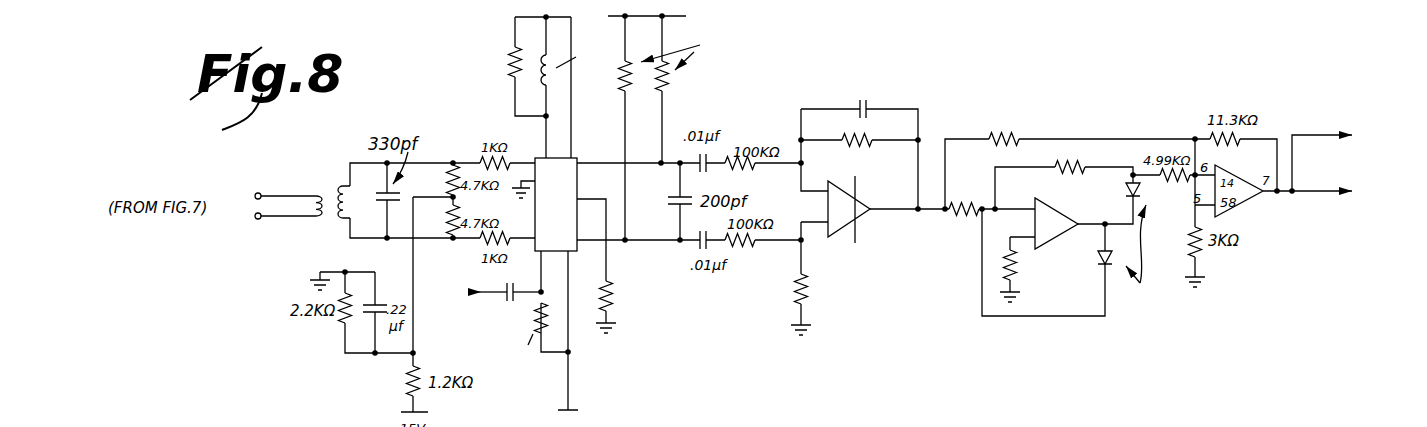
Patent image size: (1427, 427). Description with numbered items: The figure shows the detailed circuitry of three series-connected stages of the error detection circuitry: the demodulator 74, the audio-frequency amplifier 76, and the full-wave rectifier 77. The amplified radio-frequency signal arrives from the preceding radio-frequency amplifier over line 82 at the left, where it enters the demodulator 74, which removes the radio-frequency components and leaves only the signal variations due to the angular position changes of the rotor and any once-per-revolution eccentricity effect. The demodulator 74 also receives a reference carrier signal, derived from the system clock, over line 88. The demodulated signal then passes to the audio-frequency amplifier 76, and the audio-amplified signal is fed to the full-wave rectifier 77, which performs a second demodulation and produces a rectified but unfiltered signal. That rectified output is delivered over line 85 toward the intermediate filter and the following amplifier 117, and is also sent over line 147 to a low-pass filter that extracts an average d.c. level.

The line 82 is at (288, 214).
The line 88 is at (481, 299).
The demodulator 74 is at (636, 324).
The audio-frequency amplifier 76 is at (862, 310).
The full-wave rectifier 77 is at (1125, 320).
The line 147 is at (1307, 131).
The line 85 is at (1327, 193).
The amplifier 117 is at (954, 420).